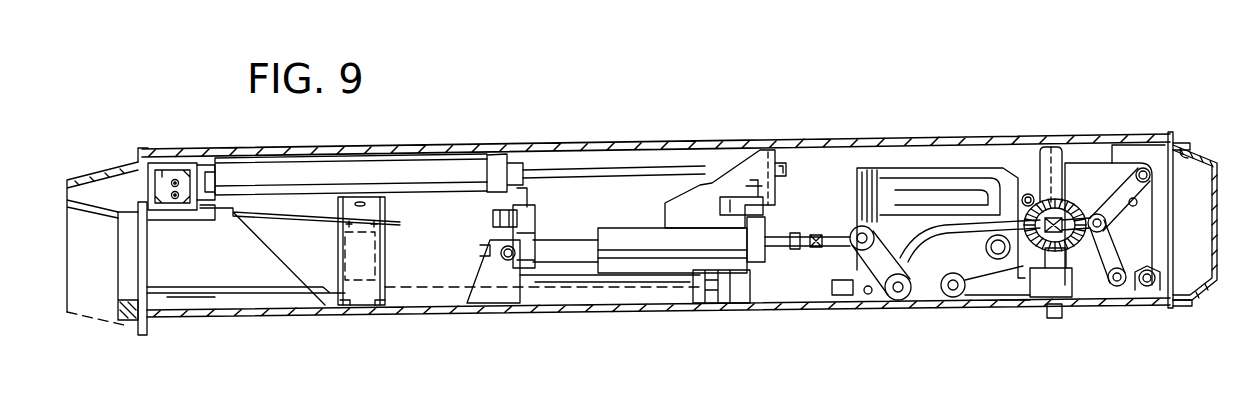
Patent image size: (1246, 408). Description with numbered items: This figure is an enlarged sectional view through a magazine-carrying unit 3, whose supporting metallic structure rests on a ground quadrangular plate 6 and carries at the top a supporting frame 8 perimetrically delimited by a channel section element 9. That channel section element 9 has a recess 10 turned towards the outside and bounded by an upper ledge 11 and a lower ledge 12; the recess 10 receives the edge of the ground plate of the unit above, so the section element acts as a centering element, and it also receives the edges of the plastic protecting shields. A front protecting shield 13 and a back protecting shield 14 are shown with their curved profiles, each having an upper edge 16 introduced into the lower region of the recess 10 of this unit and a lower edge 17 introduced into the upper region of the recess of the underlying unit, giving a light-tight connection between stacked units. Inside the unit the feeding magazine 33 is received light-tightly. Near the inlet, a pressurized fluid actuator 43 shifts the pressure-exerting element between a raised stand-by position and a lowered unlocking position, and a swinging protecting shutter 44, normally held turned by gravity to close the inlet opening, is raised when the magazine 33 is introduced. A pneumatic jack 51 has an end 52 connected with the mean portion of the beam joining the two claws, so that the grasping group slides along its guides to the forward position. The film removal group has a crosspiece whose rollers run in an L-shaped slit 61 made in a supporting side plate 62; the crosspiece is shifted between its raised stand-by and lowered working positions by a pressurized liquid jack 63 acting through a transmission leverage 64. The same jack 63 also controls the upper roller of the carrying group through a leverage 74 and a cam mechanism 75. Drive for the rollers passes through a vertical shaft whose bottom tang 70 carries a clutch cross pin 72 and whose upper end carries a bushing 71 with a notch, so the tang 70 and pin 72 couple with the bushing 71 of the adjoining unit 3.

The magazine-carrying unit 3 is at (826, 136).
The ground quadrangular plate 6 is at (582, 312).
The supporting frame 8 is at (1042, 141).
The channel section element 9 is at (1167, 133).
The recess 10 is at (1176, 140).
The upper ledge 11 is at (1173, 128).
The lower ledge 12 is at (1183, 146).
The front protecting shield 13 is at (70, 180).
The back protecting shield 14 is at (1216, 184).
The upper edge 16 is at (1186, 147).
The lower edge 17 is at (1185, 305).
The feeding magazine 33 is at (424, 216).
The pressurized fluid actuator 43 is at (172, 166).
The protecting shutter 44 is at (268, 200).
The pneumatic jack 51 is at (356, 164).
The end of pneumatic jack 52 is at (783, 149).
The L-shaped slit 61 is at (921, 190).
The supporting side plate 62 is at (893, 167).
The pressurized liquid jack 63 is at (612, 243).
The transmission leverage 64 is at (903, 291).
The tang 70 is at (1062, 313).
The bushing 71 is at (1063, 146).
The clutch cross pin 72 is at (1047, 312).
The leverage 74 is at (1100, 224).
The cam mechanism 75 is at (1143, 207).